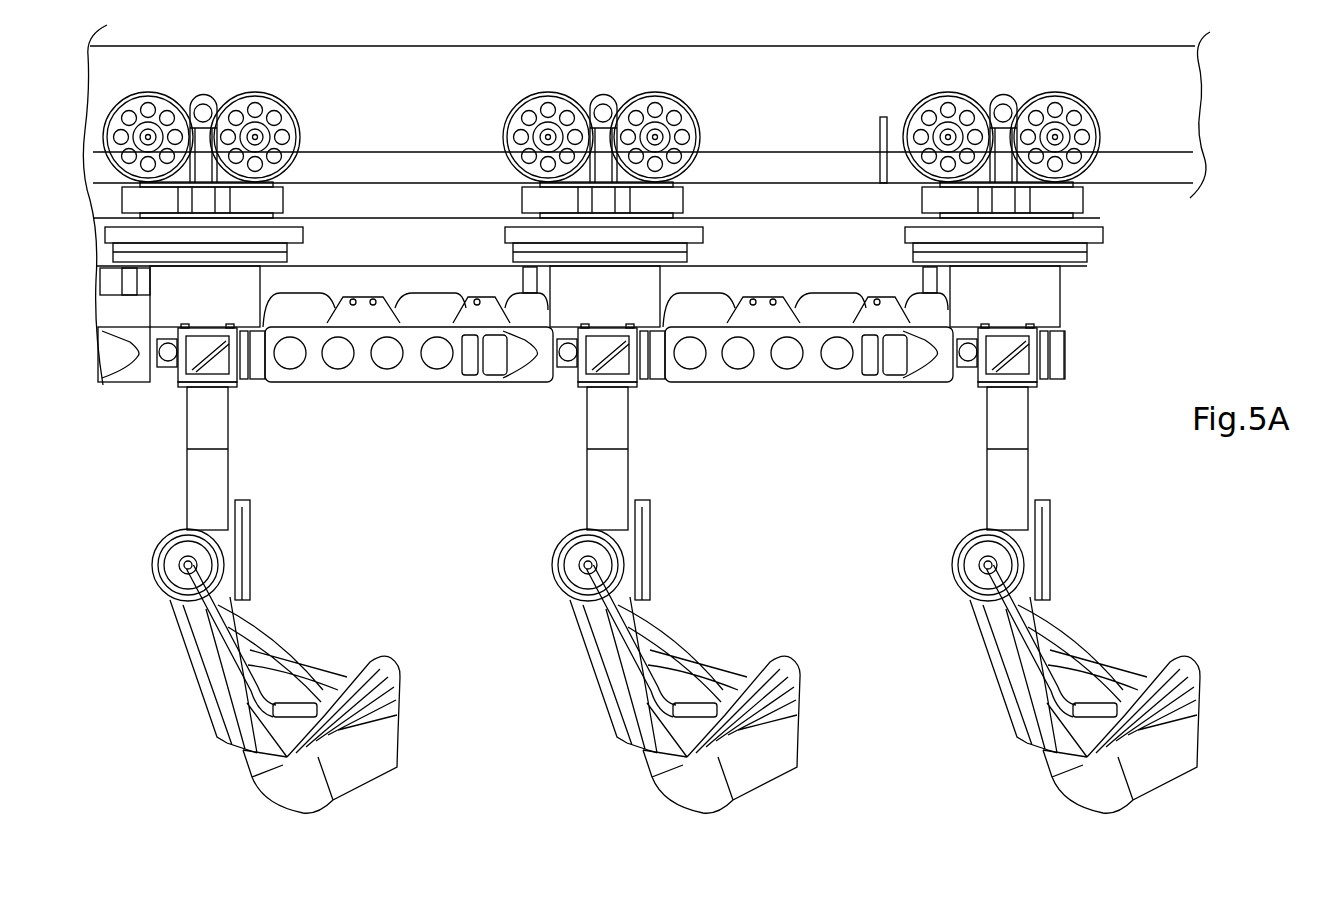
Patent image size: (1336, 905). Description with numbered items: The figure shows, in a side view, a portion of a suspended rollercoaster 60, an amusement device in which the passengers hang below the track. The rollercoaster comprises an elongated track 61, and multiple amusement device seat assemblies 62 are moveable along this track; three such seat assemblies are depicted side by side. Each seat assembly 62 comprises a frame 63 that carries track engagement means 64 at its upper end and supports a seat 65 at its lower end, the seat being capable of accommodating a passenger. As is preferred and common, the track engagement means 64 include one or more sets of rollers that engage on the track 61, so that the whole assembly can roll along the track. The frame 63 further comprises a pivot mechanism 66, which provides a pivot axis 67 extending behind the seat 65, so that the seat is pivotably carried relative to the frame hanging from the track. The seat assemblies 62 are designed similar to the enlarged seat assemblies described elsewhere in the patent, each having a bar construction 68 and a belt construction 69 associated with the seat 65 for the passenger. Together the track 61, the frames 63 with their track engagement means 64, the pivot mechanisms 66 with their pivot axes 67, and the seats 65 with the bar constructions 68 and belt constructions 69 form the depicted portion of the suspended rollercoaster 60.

The suspended rollercoaster 60 is at (1224, 104).
The elongated track 61 is at (797, 129).
The amusement device seat assembly 62 is at (746, 582).
The frame 63 is at (605, 421).
The track engagement means 64 is at (216, 314).
The seat 65 is at (690, 790).
The pivot mechanism 66 is at (578, 557).
The pivot axis 67 is at (586, 567).
The bar construction 68 is at (627, 658).
The belt construction 69 is at (693, 638).